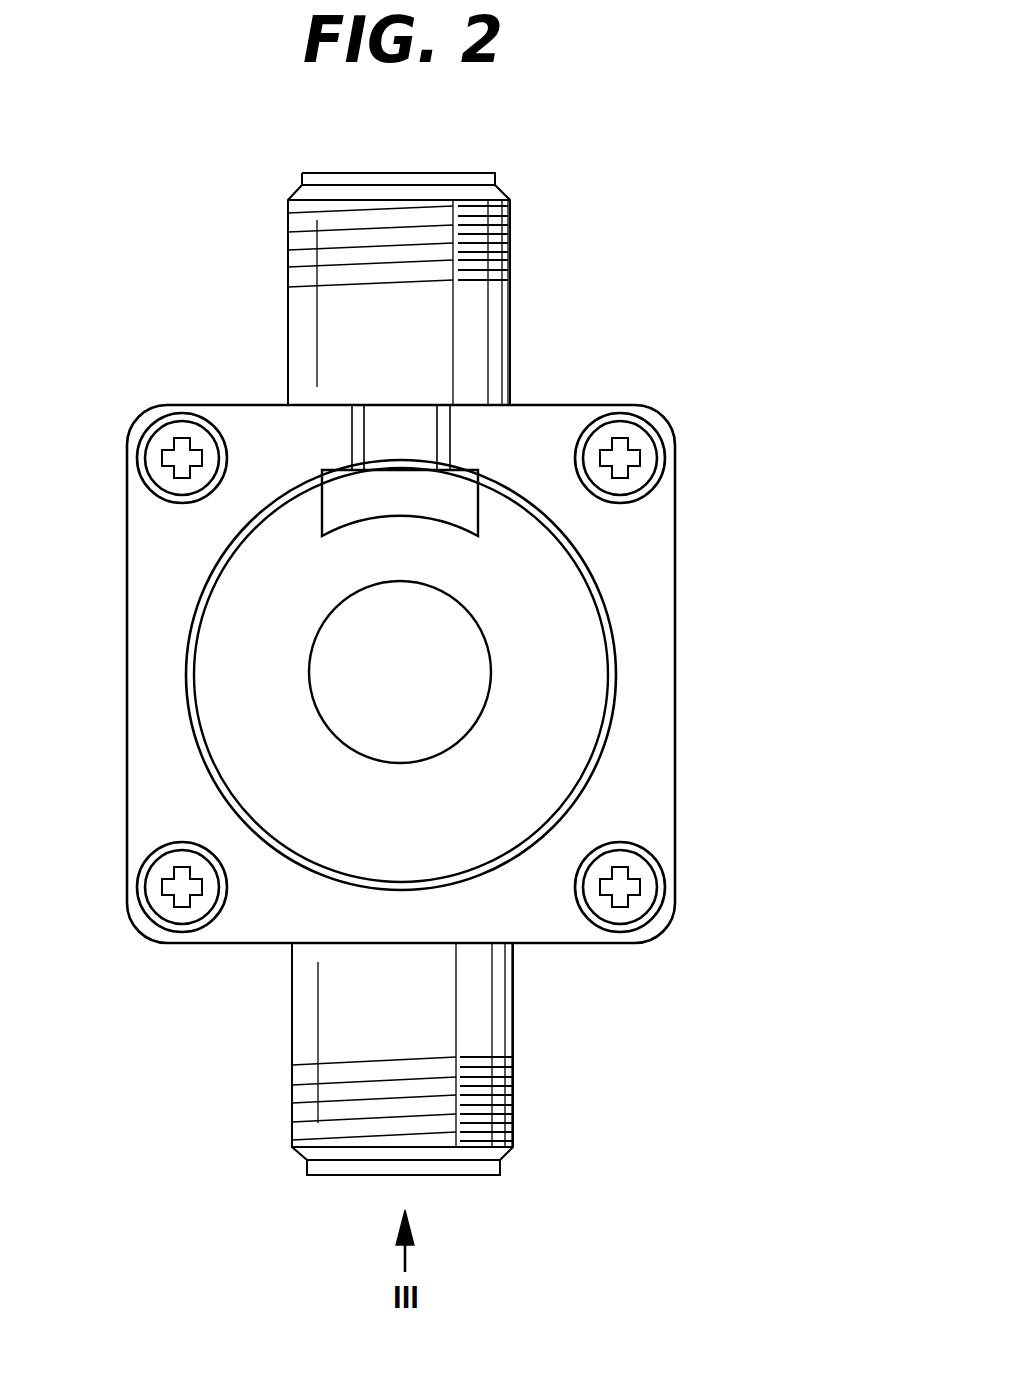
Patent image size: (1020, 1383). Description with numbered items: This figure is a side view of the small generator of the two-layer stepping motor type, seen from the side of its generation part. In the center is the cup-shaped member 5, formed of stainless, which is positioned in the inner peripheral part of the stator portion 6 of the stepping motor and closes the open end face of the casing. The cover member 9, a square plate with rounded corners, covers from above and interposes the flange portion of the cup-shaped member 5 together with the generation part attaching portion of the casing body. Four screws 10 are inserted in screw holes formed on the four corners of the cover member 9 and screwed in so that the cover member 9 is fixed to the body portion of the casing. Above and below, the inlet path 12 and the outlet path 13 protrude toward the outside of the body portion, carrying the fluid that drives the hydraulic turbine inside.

The cup-shaped member 5 is at (465, 698).
The stator portion 6 is at (553, 668).
The cover member 9 is at (657, 823).
The screws 10 is at (168, 435).
The inlet path 12 is at (495, 340).
The outlet path 13 is at (500, 1022).